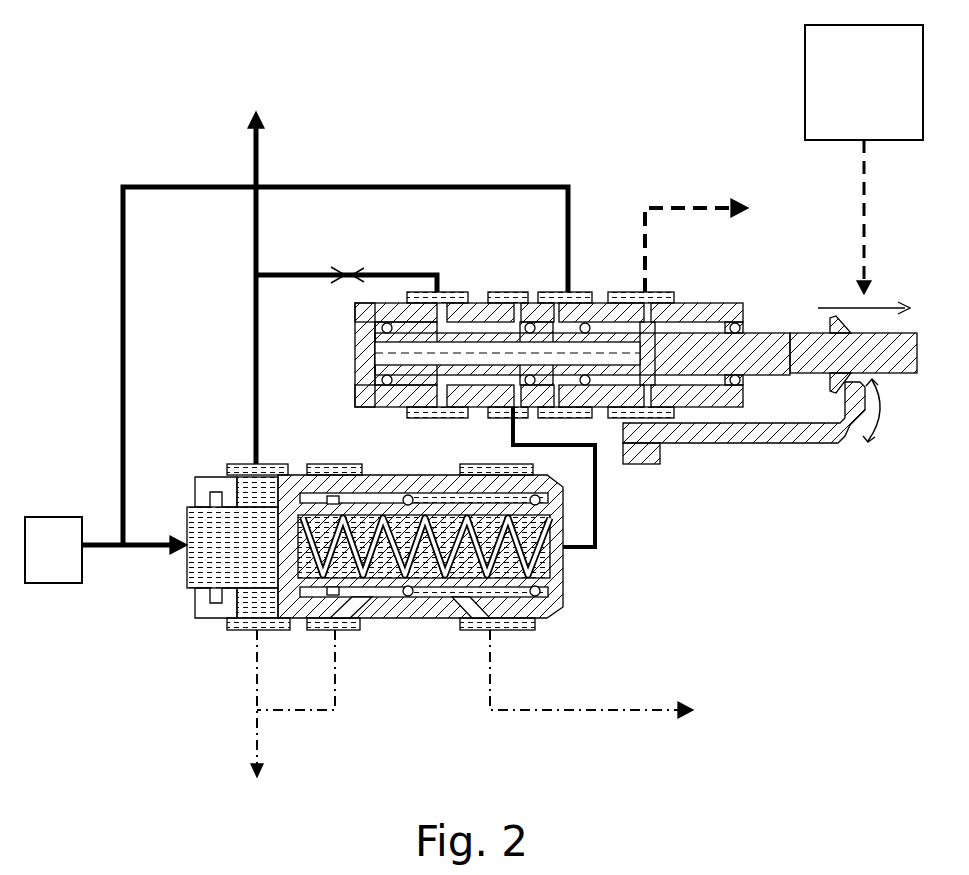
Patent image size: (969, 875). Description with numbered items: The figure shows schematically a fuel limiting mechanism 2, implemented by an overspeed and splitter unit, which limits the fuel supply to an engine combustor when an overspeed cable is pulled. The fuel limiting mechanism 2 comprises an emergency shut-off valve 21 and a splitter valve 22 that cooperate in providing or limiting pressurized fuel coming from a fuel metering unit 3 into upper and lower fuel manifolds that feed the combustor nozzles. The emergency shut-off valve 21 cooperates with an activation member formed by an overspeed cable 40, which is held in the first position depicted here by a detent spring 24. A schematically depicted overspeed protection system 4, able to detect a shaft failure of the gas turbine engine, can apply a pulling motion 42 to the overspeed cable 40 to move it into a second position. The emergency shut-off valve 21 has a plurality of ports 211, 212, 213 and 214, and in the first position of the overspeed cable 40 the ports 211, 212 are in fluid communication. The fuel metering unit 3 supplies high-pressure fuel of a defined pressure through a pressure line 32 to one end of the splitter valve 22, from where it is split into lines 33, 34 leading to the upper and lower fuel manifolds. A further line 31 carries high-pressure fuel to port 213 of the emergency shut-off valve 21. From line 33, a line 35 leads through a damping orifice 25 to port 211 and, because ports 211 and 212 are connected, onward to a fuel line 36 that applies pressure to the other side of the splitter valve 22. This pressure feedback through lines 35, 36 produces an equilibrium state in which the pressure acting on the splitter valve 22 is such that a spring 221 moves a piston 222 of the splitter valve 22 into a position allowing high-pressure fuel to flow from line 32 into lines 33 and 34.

The fuel limiting mechanism 2 is at (479, 401).
The fuel metering unit 3 is at (55, 584).
The overspeed protection system 4 is at (805, 77).
The emergency shut-off valve 21 is at (572, 308).
The port 211 is at (445, 292).
The port 212 is at (511, 292).
The port 213 is at (557, 292).
The port 214 is at (665, 292).
The splitter valve 22 is at (414, 580).
The spring 221 is at (540, 565).
The piston 222 is at (380, 600).
The detent spring 24 is at (750, 443).
The damping orifice 25 is at (355, 275).
The line 31 is at (123, 350).
The pressure line 32 is at (158, 548).
The line 33 is at (257, 366).
The line 34 is at (257, 678).
The line 35 is at (285, 275).
The fuel line 36 is at (596, 505).
The overspeed cable 40 is at (917, 373).
The pulling motion 42 is at (895, 300).